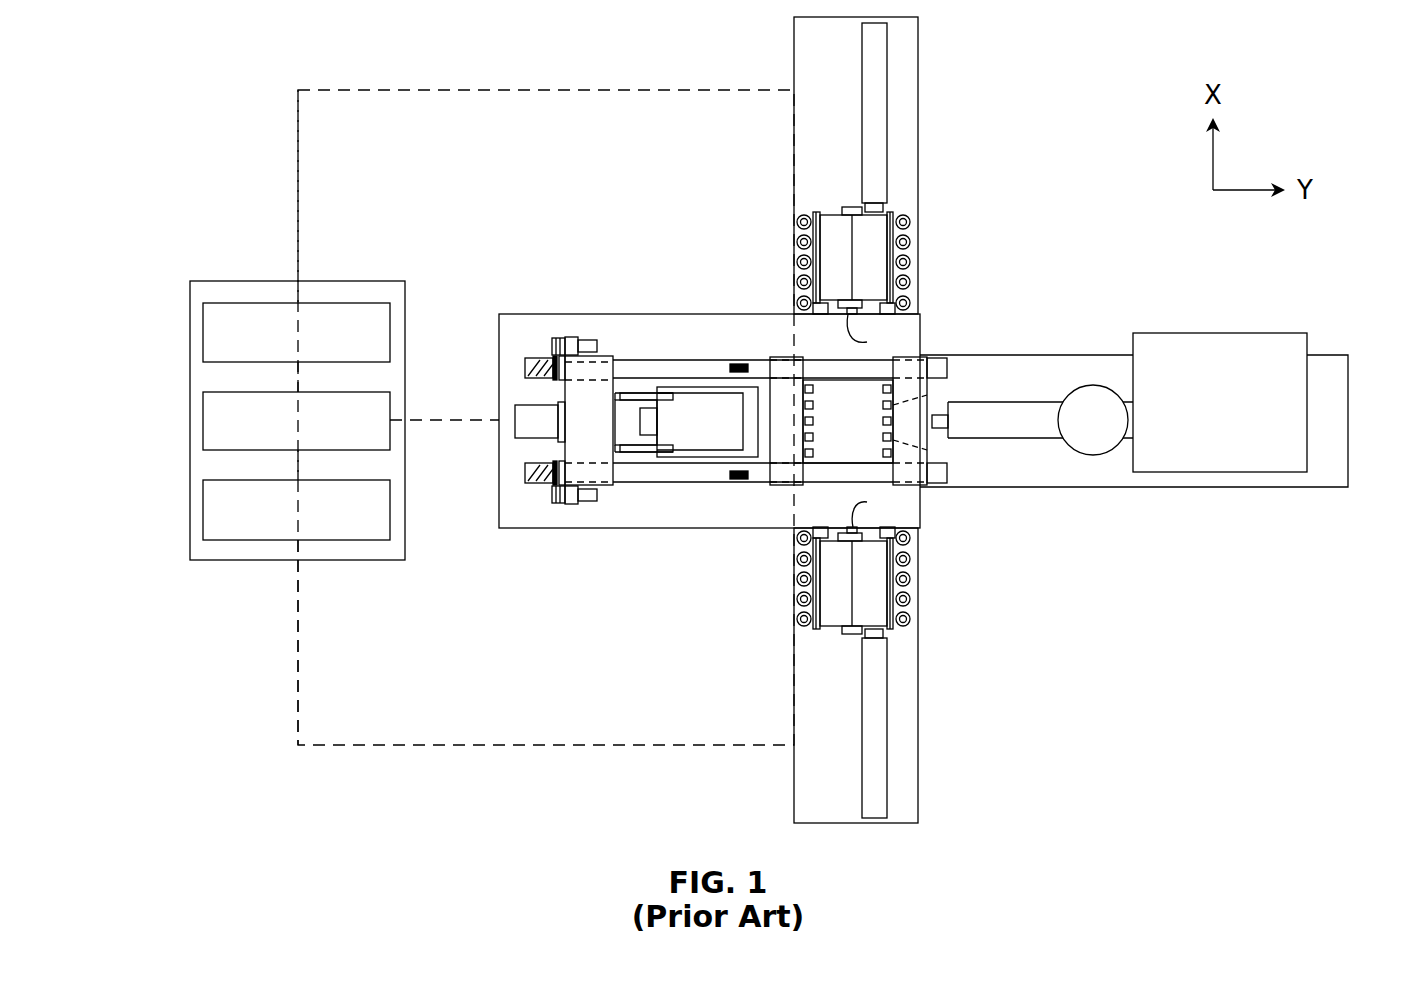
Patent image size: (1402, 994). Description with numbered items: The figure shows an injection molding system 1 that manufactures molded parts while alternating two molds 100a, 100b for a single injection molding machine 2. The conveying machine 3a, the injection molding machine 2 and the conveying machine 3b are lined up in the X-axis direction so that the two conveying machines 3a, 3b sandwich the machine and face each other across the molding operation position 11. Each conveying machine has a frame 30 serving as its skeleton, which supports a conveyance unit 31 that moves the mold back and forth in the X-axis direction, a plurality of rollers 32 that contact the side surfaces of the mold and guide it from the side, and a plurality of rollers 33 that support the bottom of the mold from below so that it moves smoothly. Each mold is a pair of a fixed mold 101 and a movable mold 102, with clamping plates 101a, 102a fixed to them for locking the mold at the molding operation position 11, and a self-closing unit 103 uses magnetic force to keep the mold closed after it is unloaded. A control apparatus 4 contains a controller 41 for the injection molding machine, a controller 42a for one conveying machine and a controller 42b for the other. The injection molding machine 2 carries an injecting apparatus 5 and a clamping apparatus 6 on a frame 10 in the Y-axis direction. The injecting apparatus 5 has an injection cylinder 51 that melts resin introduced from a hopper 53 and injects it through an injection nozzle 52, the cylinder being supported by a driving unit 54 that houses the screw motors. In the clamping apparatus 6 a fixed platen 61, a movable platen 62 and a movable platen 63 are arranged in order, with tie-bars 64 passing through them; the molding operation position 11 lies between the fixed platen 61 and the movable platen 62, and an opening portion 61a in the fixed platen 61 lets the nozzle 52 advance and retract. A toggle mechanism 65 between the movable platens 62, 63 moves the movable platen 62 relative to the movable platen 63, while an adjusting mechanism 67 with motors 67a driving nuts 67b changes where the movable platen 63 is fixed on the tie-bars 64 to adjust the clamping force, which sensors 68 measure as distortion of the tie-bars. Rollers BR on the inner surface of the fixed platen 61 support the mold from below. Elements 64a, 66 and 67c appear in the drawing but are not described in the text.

The injection molding system 1 is at (1168, 658).
The injection molding machine 2 is at (1175, 525).
The conveying machine 3a is at (930, 100).
The conveying machine 3b is at (942, 727).
The control apparatus 4 is at (345, 265).
The injecting apparatus 5 is at (1230, 317).
The clamping apparatus 6 is at (638, 296).
The frame 10 is at (1095, 355).
The molding operation position 11 is at (838, 438).
The frame 30 is at (800, 72).
The conveyance unit 31 is at (882, 87).
The rollers 32 is at (803, 217).
The rollers 33 is at (820, 315).
The controller 41 is at (205, 420).
The controller 42a is at (250, 303).
The controller 42b is at (250, 540).
The injection cylinder 51 is at (1035, 408).
The injection nozzle 52 is at (950, 422).
The hopper 53 is at (1092, 455).
The driving unit 54 is at (1170, 333).
The fixed platen 61 is at (923, 490).
The opening portion 61a is at (900, 402).
The movable platen 62 is at (768, 360).
The movable platen 63 is at (565, 395).
The tie-bars 64 is at (673, 358).
The nut 64a is at (530, 362).
The toggle mechanism 65 is at (638, 375).
The motor 66 is at (518, 425).
The adjusting mechanism 67 is at (555, 514).
The motors 67a is at (587, 342).
The nuts 67b is at (552, 362).
The nut 67c is at (555, 342).
The sensors 68 is at (740, 362).
The mold 100a is at (897, 202).
The mold 100b is at (900, 638).
The fixed mold 101 is at (880, 268).
The clamping plate 101a is at (913, 237).
The movable mold 102 is at (827, 285).
The clamping plate 102a is at (815, 243).
The self-closing unit 103 is at (853, 207).
The rollers BR is at (893, 422).